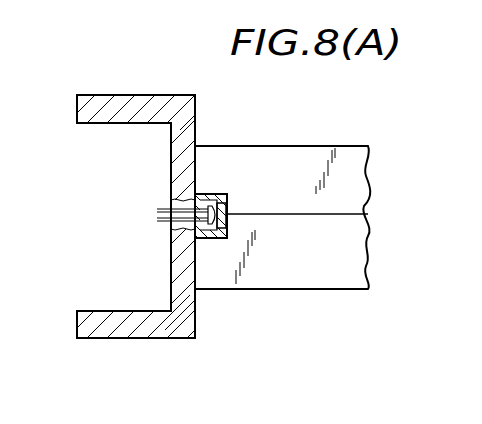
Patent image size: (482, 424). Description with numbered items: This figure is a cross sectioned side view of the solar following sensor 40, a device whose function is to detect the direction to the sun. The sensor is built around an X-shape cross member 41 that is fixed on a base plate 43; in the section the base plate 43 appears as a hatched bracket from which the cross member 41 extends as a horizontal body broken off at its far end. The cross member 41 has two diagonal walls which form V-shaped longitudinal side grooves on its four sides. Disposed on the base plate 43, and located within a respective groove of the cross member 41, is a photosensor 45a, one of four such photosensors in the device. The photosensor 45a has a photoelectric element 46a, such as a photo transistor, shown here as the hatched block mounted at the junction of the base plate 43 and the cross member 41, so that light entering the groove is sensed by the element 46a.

The solar following sensor 40 is at (352, 133).
The X-shape cross member 41 is at (286, 152).
The base plate 43 is at (157, 103).
The photosensor 45a is at (228, 226).
The photoelectric element 46a is at (201, 237).